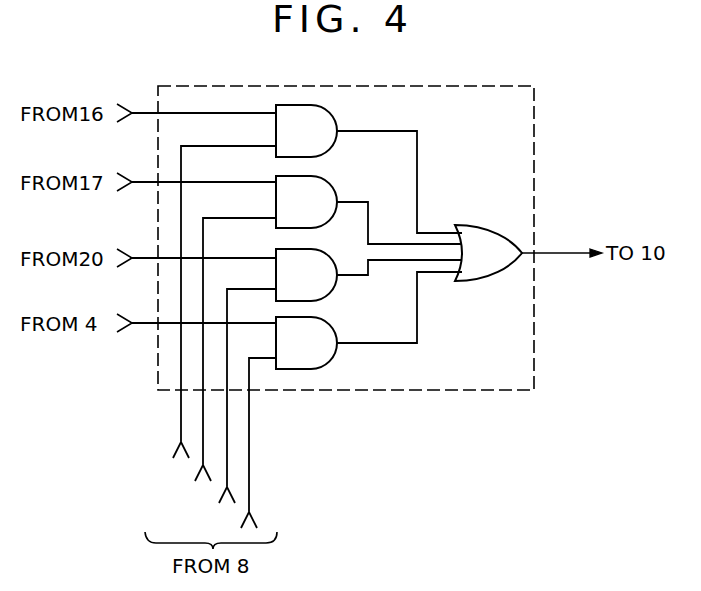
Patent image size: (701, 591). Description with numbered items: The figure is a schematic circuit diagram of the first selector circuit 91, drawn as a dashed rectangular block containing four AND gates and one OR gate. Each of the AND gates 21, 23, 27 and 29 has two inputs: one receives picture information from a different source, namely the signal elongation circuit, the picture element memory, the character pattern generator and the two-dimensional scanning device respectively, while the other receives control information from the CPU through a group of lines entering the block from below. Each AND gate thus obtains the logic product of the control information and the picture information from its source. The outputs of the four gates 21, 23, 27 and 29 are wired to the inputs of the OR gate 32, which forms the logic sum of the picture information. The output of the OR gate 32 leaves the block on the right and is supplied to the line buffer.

The AND gate 21 is at (329, 104).
The AND gate 23 is at (330, 176).
The AND gate 27 is at (329, 247).
The AND gate 29 is at (330, 314).
The OR gate 32 is at (472, 281).
The first selector circuit 91 is at (477, 86).